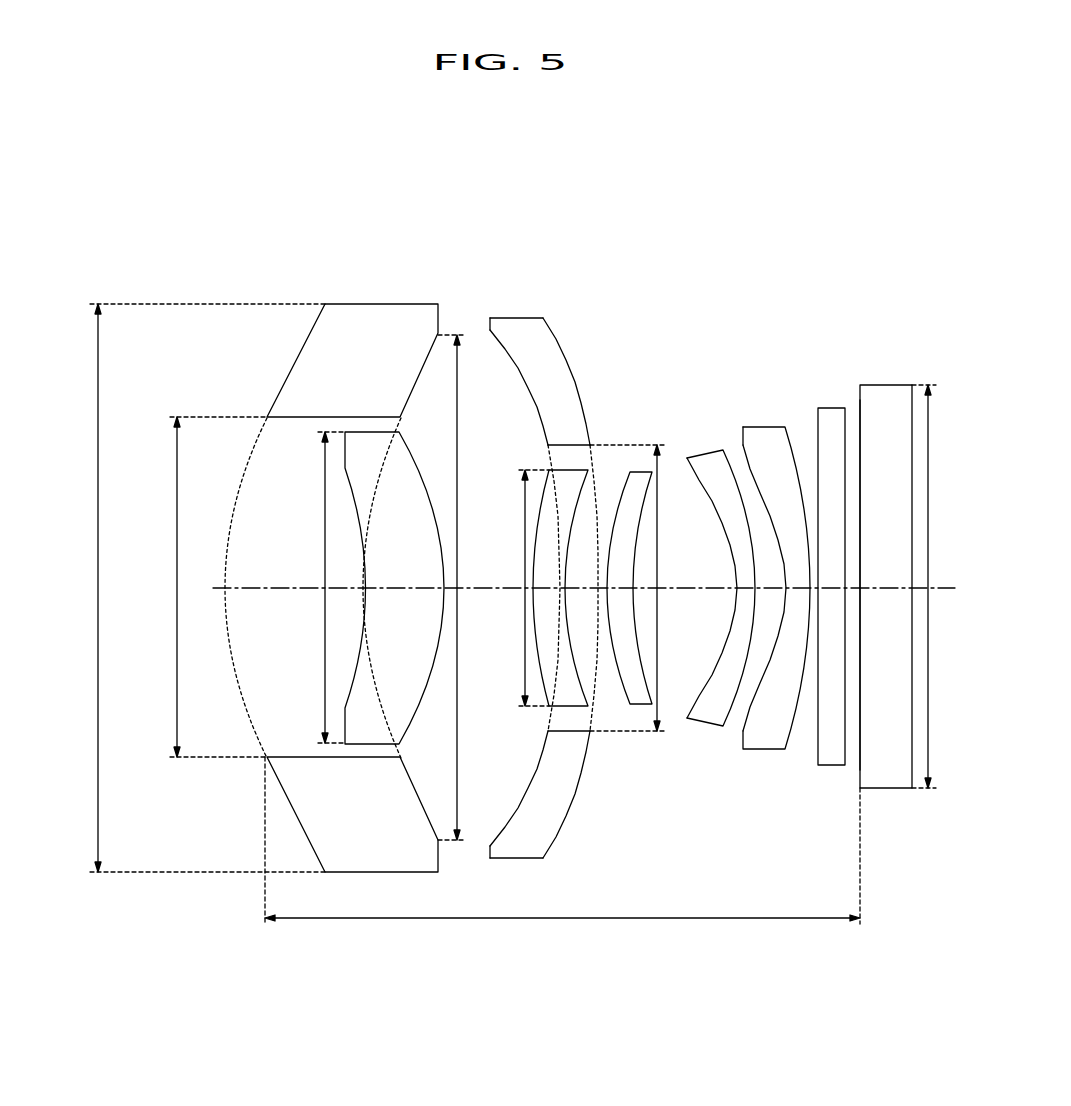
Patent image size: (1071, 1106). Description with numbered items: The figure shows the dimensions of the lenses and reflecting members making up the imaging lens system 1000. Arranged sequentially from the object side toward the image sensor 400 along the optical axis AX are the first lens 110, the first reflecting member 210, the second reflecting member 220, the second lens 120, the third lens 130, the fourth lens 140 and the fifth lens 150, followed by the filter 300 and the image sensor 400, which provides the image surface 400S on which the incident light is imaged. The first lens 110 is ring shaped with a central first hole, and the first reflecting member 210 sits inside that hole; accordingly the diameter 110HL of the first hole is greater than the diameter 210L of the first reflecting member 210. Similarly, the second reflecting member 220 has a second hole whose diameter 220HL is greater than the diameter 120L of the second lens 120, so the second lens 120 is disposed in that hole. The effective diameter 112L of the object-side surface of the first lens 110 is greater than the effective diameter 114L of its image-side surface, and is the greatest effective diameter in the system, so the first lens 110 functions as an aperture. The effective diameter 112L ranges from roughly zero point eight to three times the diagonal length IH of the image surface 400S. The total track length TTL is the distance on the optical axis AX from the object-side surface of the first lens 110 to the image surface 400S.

The imaging lens system 1000 is at (850, 206).
The first lens 110 is at (382, 304).
The first reflecting member 210 is at (340, 450).
The second reflecting member 220 is at (521, 318).
The second lens 120 is at (588, 470).
The third lens 130 is at (640, 472).
The fourth lens 140 is at (700, 456).
The fifth lens 150 is at (762, 427).
The filter 300 is at (831, 408).
The image sensor 400 is at (887, 385).
The image surface 400S is at (857, 776).
The optical axis AX is at (570, 588).
The effective diameter of the object-side surface of the first lens 112L is at (185, 588).
The diameter of the first hole 110HL is at (185, 587).
The diameter of the first reflecting member 210L is at (305, 587).
The effective diameter of the image-side surface of the first lens 114L is at (475, 587).
The diameter of the second lens 120L is at (508, 588).
The diameter of the second hole 220HL is at (660, 588).
The diagonal length of the image surface IH is at (937, 586).
The total track length TTL is at (562, 853).